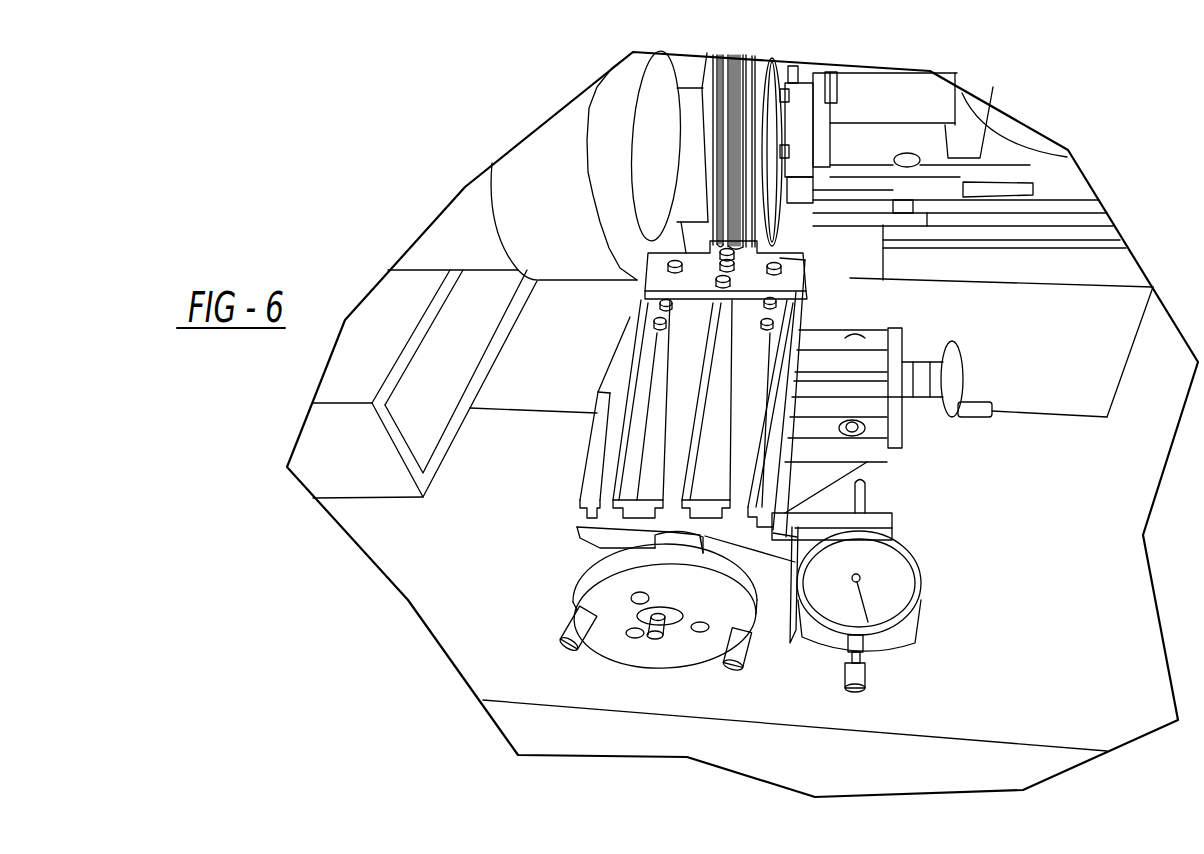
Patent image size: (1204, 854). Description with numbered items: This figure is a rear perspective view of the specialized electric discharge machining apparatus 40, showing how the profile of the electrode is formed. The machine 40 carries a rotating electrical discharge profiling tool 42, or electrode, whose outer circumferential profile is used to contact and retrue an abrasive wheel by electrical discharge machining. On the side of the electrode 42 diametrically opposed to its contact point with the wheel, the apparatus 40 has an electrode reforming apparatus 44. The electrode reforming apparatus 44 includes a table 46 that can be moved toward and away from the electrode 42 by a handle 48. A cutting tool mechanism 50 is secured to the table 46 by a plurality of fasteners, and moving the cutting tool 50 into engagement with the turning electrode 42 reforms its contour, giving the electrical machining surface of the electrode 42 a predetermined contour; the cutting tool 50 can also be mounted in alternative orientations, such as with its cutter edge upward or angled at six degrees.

The electric discharge machining apparatus 40 is at (440, 200).
The electrical discharge profiling tool 42 is at (745, 188).
The electrode reforming apparatus 44 is at (735, 373).
The table 46 is at (645, 452).
The handle 48 is at (687, 640).
The cutting tool mechanism 50 is at (750, 272).